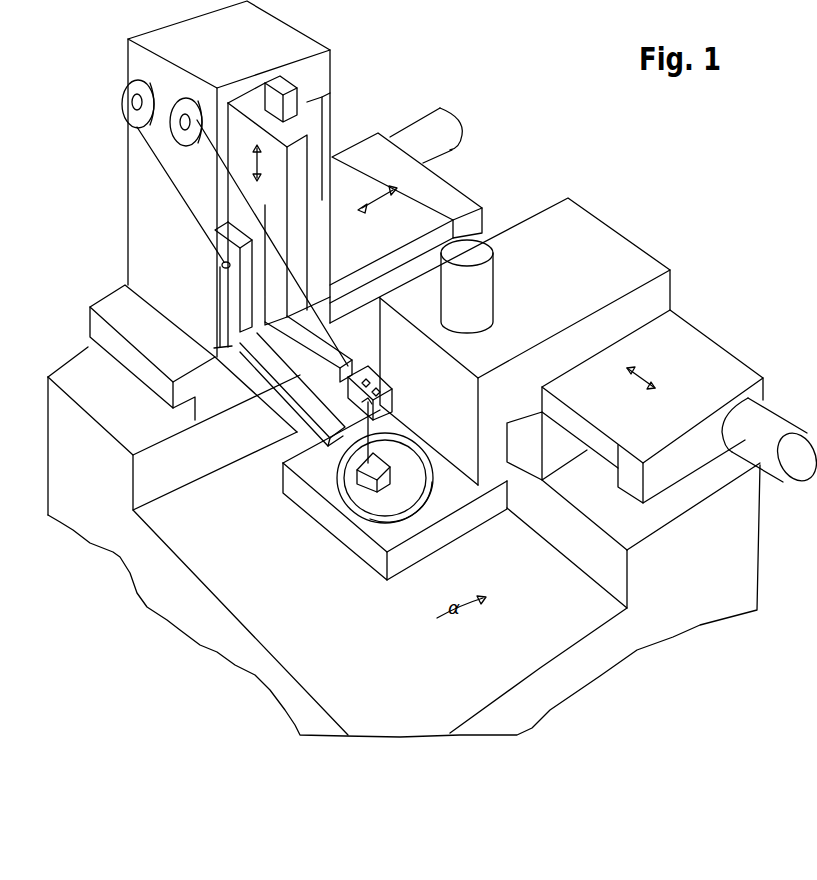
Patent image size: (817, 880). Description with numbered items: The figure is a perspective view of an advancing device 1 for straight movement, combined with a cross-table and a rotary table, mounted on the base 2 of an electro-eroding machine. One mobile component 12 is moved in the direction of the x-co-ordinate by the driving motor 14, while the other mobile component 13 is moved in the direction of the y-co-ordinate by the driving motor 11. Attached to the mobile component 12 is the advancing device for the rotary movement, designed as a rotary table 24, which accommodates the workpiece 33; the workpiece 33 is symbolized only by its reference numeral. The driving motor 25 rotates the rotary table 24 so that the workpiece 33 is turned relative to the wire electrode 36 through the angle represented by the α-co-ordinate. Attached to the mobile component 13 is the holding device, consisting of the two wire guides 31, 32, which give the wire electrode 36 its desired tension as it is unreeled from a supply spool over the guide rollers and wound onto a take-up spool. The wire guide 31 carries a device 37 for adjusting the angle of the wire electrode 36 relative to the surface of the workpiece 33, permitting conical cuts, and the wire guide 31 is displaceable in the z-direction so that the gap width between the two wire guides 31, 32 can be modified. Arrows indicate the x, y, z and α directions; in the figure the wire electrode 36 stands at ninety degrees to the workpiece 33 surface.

The advancing device 1 is at (590, 163).
The base 2 is at (748, 540).
The driving motor 11 is at (440, 117).
The mobile component 12 is at (633, 253).
The mobile component 13 is at (283, 37).
The driving motor 14 is at (782, 427).
The rotary table 24 is at (403, 513).
The driving motor 25 is at (483, 278).
The wire guide 31 is at (330, 350).
The wire guide 32 is at (295, 427).
The workpiece 33 is at (363, 500).
The wire electrode 36 is at (183, 200).
The device for the adjustment of the angle 37 is at (382, 378).